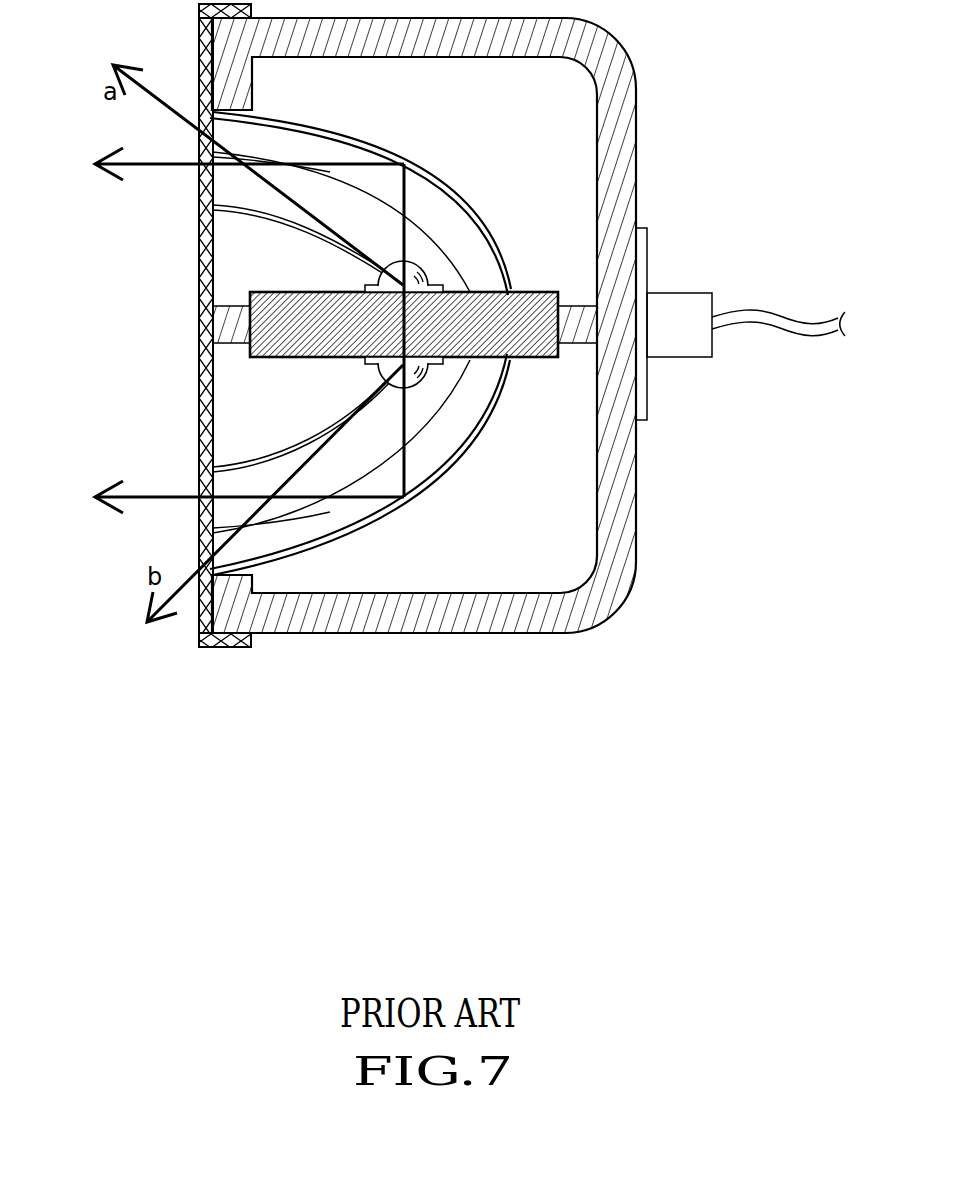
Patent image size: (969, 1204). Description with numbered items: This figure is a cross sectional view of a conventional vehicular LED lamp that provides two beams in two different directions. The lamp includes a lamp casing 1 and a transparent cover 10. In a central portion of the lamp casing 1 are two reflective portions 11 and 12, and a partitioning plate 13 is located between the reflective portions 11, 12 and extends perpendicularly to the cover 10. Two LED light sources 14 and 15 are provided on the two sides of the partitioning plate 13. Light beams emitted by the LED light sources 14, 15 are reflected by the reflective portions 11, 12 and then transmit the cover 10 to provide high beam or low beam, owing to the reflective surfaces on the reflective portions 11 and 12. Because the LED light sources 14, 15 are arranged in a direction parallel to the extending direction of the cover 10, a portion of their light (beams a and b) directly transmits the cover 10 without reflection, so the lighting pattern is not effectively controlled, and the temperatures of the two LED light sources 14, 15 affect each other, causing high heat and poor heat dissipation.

The lamp casing 1 is at (616, 130).
The transparent cover 10 is at (205, 243).
The reflective portion 11 is at (447, 190).
The reflective portion 12 is at (457, 458).
The partitioning plate 13 is at (222, 320).
The LED light source 14 is at (428, 275).
The LED light source 15 is at (428, 373).